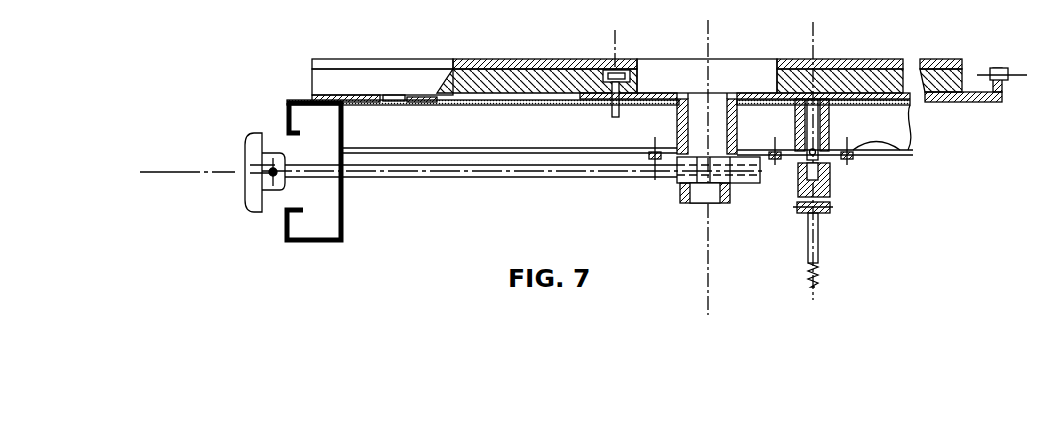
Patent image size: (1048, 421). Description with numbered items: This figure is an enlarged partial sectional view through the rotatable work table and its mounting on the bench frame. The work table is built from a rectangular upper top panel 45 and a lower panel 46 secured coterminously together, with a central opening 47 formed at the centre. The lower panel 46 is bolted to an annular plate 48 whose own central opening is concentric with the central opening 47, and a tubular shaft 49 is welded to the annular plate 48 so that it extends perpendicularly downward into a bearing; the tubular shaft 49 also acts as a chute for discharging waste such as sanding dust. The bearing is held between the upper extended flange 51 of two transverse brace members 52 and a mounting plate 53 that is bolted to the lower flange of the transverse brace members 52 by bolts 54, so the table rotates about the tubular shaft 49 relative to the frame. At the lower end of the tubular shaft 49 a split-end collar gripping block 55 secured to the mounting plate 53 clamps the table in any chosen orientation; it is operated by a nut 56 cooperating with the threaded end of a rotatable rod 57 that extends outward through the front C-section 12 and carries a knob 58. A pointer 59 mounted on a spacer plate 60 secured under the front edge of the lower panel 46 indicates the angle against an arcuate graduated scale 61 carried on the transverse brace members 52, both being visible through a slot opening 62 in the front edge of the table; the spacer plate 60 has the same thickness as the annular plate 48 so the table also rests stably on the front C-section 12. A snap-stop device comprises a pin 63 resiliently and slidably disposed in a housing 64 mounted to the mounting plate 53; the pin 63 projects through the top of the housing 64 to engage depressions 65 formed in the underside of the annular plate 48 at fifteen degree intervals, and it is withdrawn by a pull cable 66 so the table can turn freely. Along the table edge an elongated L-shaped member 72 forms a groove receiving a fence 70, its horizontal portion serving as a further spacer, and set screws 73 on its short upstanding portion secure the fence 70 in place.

The front C-section 12 is at (343, 206).
The upper top panel 45 is at (352, 63).
The lower panel 46 is at (333, 80).
The central opening 47 is at (743, 72).
The annular plate 48 is at (672, 95).
The tubular shaft 49 is at (690, 118).
The upper extended flange 51 is at (499, 106).
The transverse brace members 52 is at (554, 121).
The mounting plate 53 is at (897, 152).
The bolts 54 is at (652, 178).
The split-end collar gripping block 55 is at (678, 182).
The nut 56 is at (747, 183).
The rotatable rod 57 is at (548, 178).
The knob 58 is at (248, 197).
The pointer 59 is at (393, 95).
The spacer plate 60 is at (378, 106).
The arcuate graduated scale 61 is at (437, 106).
The slot opening 62 is at (424, 56).
The pin 63 is at (810, 120).
The housing 64 is at (830, 120).
The depressions 65 is at (837, 60).
The pull cable 66 is at (820, 240).
The fence 70 is at (973, 72).
The L-shaped member 72 is at (952, 103).
The set screws 73 is at (1007, 72).